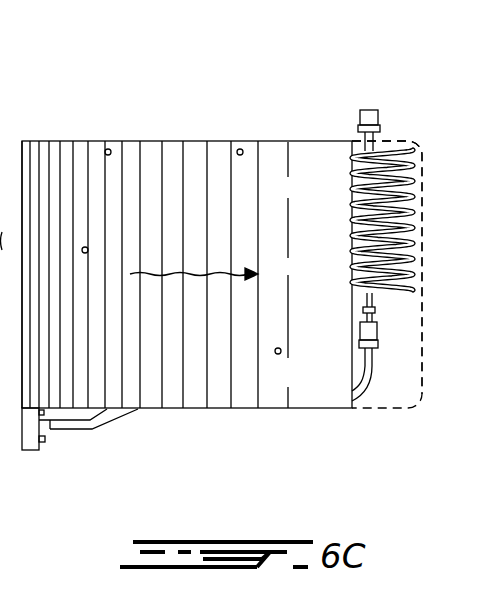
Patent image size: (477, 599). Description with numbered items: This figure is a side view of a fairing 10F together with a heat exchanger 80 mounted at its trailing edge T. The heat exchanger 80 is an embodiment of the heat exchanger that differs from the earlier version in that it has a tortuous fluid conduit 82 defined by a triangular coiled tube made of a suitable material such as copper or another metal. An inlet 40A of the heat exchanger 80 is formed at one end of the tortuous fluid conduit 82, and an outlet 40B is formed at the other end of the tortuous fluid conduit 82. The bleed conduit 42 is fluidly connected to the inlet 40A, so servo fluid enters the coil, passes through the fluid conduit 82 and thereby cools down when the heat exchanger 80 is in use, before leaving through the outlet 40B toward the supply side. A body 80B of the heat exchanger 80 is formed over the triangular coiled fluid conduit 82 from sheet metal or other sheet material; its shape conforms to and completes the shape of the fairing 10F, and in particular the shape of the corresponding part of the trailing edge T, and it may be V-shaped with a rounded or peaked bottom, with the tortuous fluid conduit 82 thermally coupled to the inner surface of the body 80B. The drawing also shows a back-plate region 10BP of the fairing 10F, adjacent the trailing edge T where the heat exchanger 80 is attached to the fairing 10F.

The fairing 10F is at (336, 244).
The trailing edge T is at (326, 336).
The back plate 10BP is at (193, 275).
The heat exchanger 80 is at (398, 253).
The body 80B is at (423, 192).
The tortuous fluid conduit 82 is at (393, 289).
The outlet 40B is at (362, 115).
The inlet 40A is at (374, 332).
The bleed conduit 42 is at (363, 372).